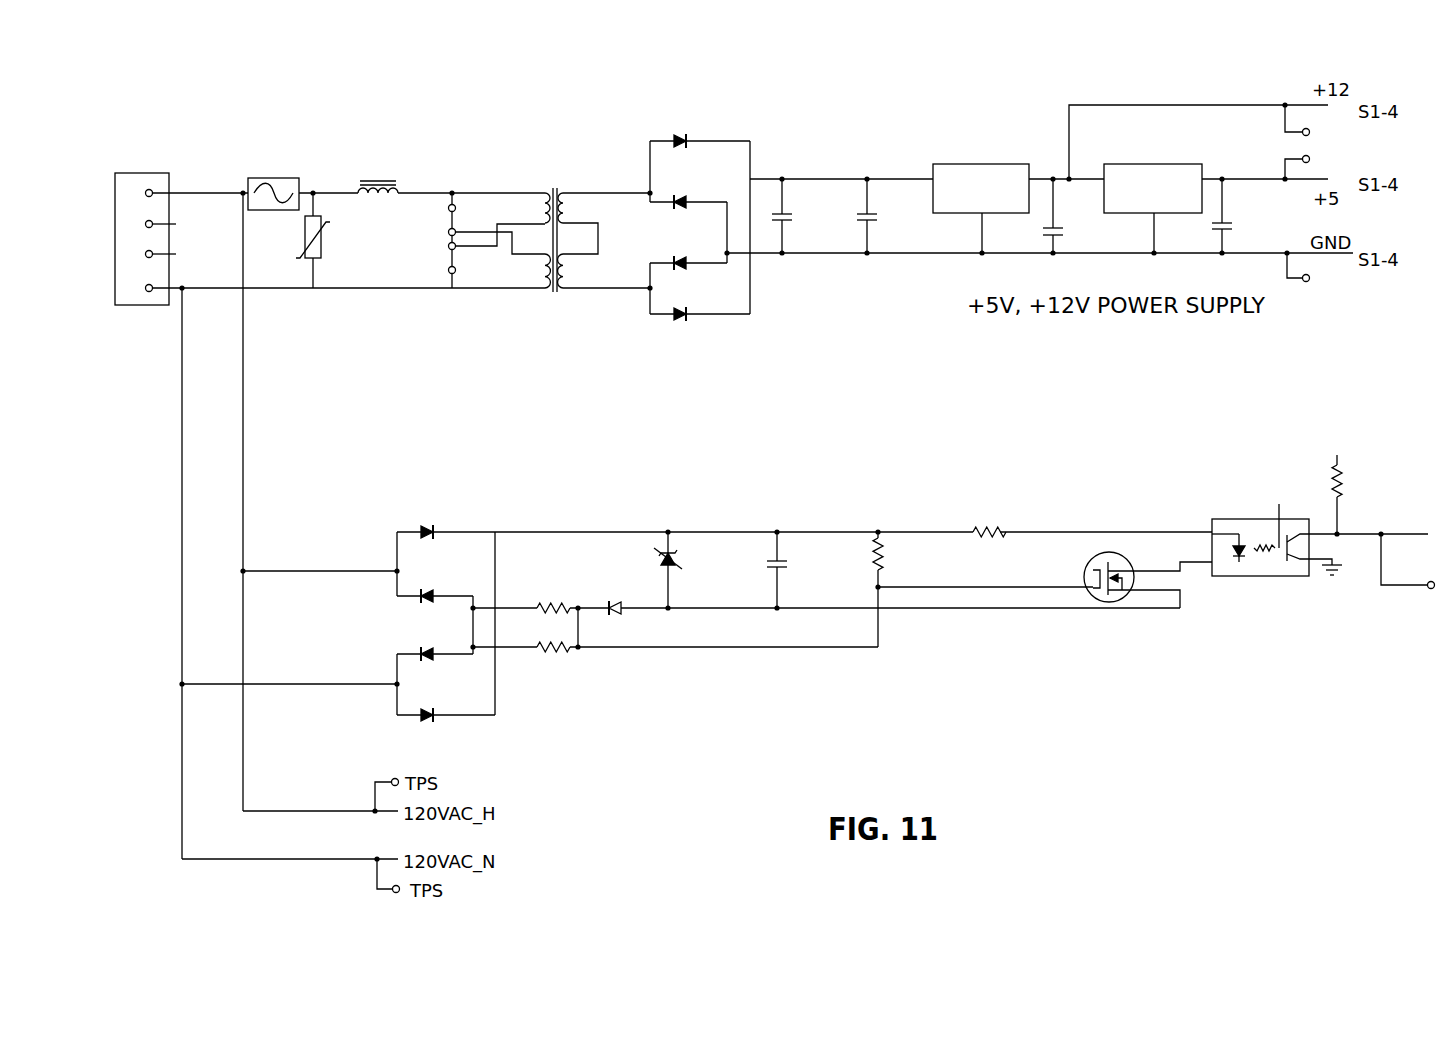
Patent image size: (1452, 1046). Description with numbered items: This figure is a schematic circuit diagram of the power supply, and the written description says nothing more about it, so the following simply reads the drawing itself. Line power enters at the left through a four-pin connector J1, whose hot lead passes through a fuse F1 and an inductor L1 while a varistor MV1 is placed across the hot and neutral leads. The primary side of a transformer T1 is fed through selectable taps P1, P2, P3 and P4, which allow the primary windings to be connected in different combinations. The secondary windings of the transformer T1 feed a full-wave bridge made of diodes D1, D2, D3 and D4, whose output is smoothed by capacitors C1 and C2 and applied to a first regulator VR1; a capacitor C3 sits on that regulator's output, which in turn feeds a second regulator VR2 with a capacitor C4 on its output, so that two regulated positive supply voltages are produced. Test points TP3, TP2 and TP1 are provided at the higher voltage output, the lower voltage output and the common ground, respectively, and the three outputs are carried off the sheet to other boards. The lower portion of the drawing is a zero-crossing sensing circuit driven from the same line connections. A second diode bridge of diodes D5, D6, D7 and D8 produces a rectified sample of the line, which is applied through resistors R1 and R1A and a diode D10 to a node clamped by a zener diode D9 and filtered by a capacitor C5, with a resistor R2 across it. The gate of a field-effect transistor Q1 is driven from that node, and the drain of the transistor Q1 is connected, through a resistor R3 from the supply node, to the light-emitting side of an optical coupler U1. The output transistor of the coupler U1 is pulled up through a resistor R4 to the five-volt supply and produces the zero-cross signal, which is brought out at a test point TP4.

The 4-pin power connector J1 is at (329, 253).
The fuse F1 is at (269, 175).
The metal oxide varistor MV1 is at (332, 240).
The inductor L1 is at (378, 167).
The primary tap 1 P1 is at (466, 240).
The primary tap 2 P2 is at (480, 237).
The primary tap 3 P3 is at (480, 240).
The primary tap 4 P4 is at (466, 269).
The power transformer T1 is at (587, 216).
The rectifier diode D1 is at (700, 126).
The rectifier diode D2 is at (688, 191).
The rectifier diode D3 is at (688, 252).
The rectifier diode D4 is at (700, 303).
The filter capacitor C1 is at (787, 216).
The filter capacitor C2 is at (879, 216).
The +12V voltage regulator VR1 is at (980, 190).
The filter capacitor C3 is at (1056, 216).
The +5V voltage regulator VR2 is at (1154, 193).
The filter capacitor C4 is at (1228, 216).
The test point ground TP1 is at (1316, 281).
The test point +5V TP2 is at (1319, 164).
The test point +12V TP3 is at (1319, 124).
The bridge diode D5 is at (446, 522).
The bridge diode D6 is at (435, 584).
The bridge diode D7 is at (435, 643).
The bridge diode D8 is at (446, 704).
The resistor R1 is at (541, 593).
The resistor R1A is at (675, 637).
The diode D10 is at (888, 594).
The zener diode D9 is at (683, 570).
The capacitor C5 is at (788, 570).
The resistor R2 is at (895, 589).
The resistor R3 is at (989, 511).
The MOSFET transistor Q1 is at (1116, 577).
The optocoupler U1 is at (1288, 549).
The pull-up resistor R4 is at (1352, 474).
The test point zero cross TP4 is at (1411, 562).